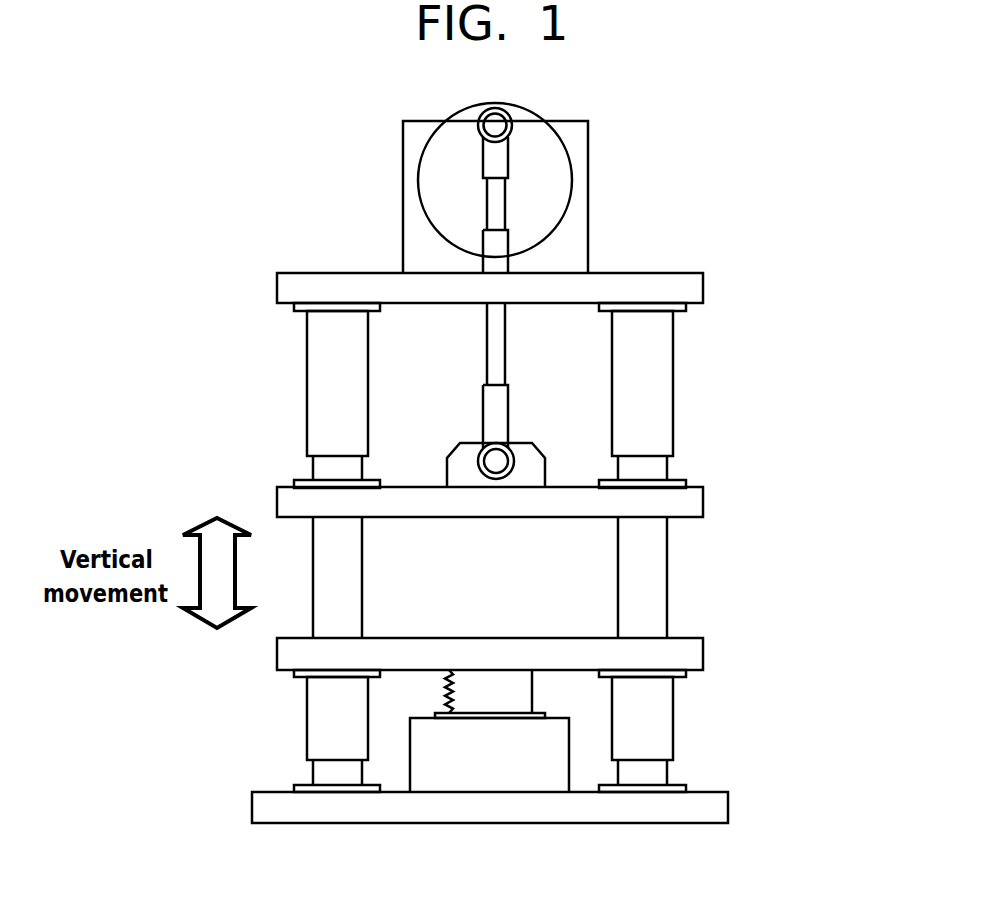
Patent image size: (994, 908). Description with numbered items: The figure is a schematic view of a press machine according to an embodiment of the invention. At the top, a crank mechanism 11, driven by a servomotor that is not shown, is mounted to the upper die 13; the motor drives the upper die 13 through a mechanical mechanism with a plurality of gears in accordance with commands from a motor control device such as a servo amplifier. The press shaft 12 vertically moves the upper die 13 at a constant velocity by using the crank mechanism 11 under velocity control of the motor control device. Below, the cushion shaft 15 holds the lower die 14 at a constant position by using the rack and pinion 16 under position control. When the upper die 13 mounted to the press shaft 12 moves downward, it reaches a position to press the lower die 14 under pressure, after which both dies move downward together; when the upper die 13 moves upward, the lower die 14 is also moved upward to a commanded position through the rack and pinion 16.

The crank mechanism 11 is at (535, 200).
The press shaft 12 is at (692, 379).
The upper die 13 is at (705, 503).
The lower die 14 is at (705, 657).
The cushion shaft 15 is at (692, 728).
The rack and pinion 16 is at (528, 762).